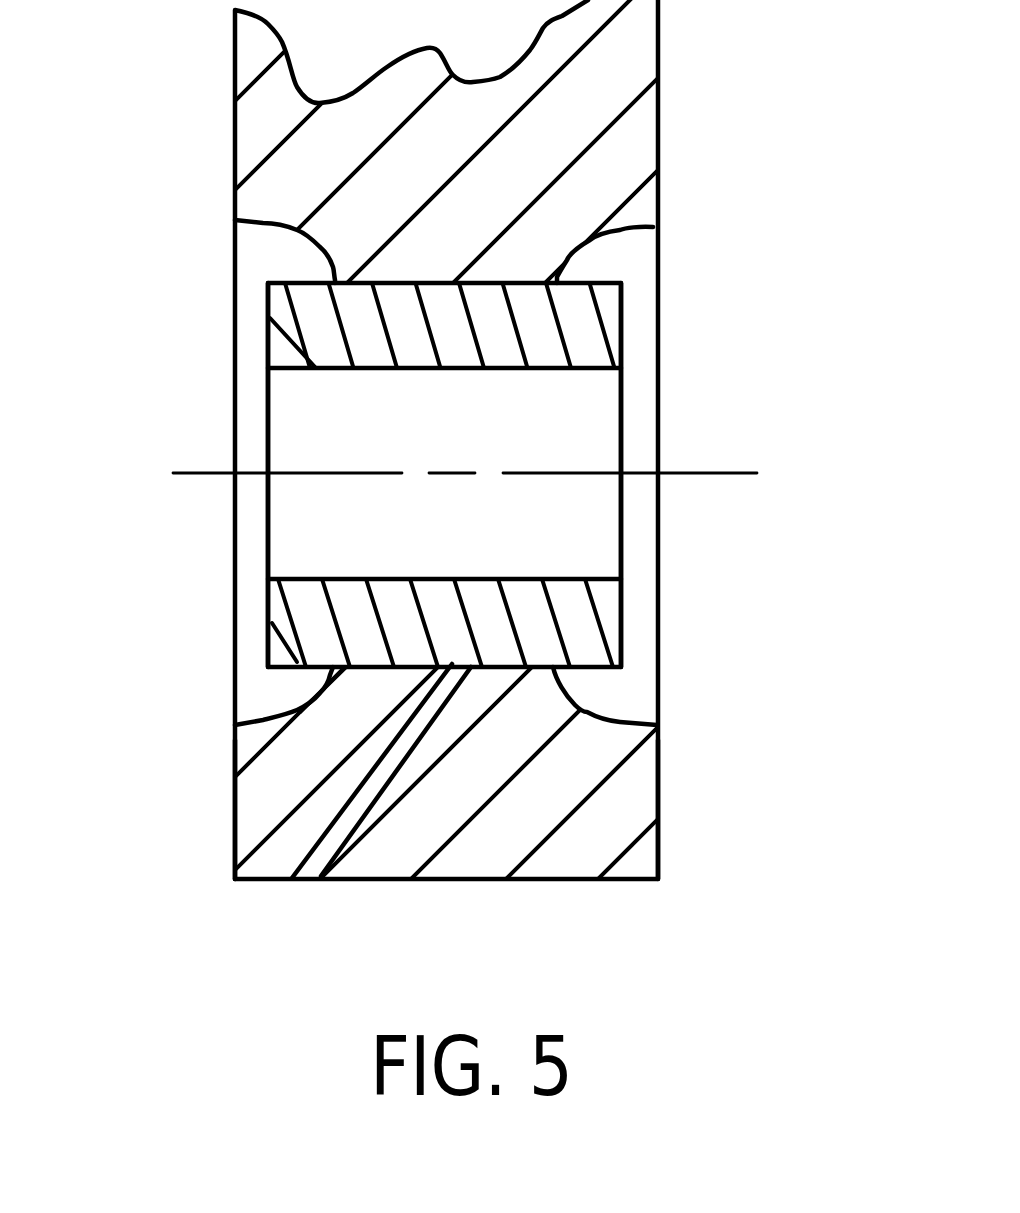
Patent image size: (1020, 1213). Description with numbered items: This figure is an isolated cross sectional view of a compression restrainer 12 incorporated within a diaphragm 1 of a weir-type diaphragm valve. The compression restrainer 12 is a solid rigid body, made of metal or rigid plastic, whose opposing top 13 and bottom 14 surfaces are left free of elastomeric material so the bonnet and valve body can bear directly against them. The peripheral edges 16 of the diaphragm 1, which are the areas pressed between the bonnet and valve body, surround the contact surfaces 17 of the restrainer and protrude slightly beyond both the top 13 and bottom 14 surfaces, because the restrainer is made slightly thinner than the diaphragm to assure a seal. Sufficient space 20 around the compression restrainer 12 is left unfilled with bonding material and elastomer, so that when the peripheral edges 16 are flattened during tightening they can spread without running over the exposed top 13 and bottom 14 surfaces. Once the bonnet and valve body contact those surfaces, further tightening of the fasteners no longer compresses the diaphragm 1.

The diaphragm 1 is at (605, 157).
The compression restrainer 12 is at (598, 313).
The top surface 13 is at (620, 427).
The bottom surface 14 is at (267, 417).
The peripheral edges 16 is at (232, 814).
The contact surfaces 17 is at (292, 878).
The space 20 is at (267, 690).